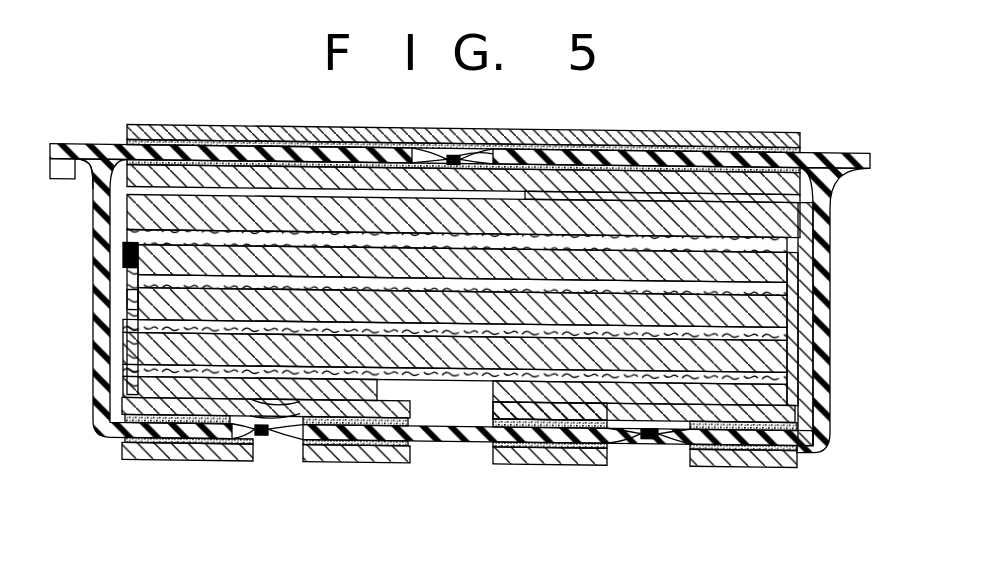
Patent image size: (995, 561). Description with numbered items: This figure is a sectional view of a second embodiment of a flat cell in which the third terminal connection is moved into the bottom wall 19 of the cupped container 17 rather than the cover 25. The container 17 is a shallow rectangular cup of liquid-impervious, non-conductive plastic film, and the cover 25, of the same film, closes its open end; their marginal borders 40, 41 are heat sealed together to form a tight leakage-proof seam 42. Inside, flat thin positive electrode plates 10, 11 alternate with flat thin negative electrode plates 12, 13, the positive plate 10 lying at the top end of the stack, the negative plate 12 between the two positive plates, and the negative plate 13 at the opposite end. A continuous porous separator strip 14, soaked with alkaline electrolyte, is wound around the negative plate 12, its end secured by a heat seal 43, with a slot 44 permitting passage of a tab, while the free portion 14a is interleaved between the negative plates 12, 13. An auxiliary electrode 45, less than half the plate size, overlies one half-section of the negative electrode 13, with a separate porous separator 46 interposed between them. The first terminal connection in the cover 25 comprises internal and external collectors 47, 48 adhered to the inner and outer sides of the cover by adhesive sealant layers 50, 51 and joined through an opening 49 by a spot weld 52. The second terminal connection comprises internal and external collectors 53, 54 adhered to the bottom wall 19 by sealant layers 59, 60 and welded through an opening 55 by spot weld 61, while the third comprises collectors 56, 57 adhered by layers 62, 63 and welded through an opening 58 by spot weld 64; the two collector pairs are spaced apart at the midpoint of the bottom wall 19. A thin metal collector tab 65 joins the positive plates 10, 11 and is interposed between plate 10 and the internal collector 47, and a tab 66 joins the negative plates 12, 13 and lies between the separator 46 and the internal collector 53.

The positive electrode plate 10 is at (793, 214).
The positive electrode plate 11 is at (790, 330).
The negative electrode plate 12 is at (790, 280).
The negative electrode plate 13 is at (790, 372).
The separator strip 14 is at (135, 316).
The free portion of separator strip 14a is at (790, 352).
The cupped container 17 is at (100, 340).
The bottom wall 19 is at (455, 440).
The cover 25 is at (647, 143).
The marginal border 40 is at (62, 176).
The marginal border 41 is at (90, 150).
The seam 42 is at (848, 148).
The heat seal 43 is at (130, 300).
The slot 44 is at (122, 256).
The auxiliary electrode 45 is at (806, 432).
The separator 46 is at (790, 398).
The internal current collector 47 is at (530, 190).
The external current collector 48 is at (590, 137).
The opening 49 is at (478, 150).
The adhesive sealant layer 50 is at (180, 143).
The adhesive sealant layer 51 is at (212, 134).
The spot weld 52 is at (450, 150).
The second internal current collector 53 is at (163, 418).
The second external current collector 54 is at (208, 455).
The opening 55 is at (290, 412).
The third internal current collector 56 is at (535, 405).
The third external current collector 57 is at (570, 420).
The opening 58 is at (620, 455).
The adhesive sealant layer 59 is at (375, 420).
The adhesive sealant layer 60 is at (400, 455).
The spot weld 61 is at (260, 436).
The adhesive sealant layer 62 is at (745, 420).
The adhesive sealant layer 63 is at (775, 455).
The spot weld 64 is at (650, 435).
The collector tab 65 is at (690, 200).
The tab 66 is at (127, 285).